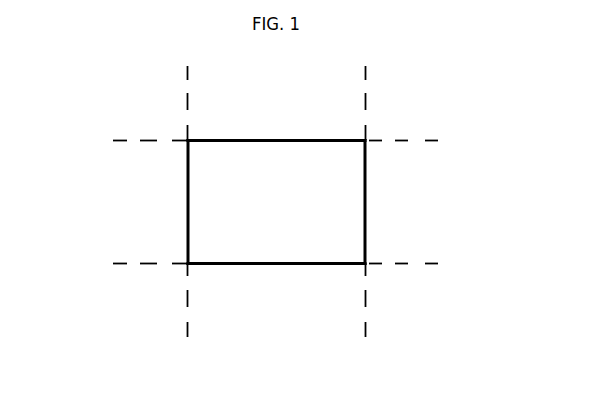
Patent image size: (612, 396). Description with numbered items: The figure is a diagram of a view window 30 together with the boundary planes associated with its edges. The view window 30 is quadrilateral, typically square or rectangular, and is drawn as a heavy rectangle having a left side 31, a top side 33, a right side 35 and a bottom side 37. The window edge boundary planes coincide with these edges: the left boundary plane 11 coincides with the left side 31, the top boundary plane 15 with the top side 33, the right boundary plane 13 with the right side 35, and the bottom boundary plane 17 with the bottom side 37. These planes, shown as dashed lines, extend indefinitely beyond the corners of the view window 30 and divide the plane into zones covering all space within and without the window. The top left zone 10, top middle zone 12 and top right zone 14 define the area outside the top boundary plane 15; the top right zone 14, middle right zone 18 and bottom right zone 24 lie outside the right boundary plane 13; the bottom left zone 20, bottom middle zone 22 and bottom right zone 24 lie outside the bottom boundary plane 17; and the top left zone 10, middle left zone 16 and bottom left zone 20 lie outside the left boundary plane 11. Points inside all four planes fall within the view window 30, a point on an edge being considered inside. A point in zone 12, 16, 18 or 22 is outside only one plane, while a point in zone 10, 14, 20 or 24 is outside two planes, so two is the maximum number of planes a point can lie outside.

The top left zone 10 is at (152, 104).
The left boundary plane 11 is at (186, 70).
The top middle zone 12 is at (286, 104).
The right boundary plane 13 is at (367, 71).
The top right zone 14 is at (419, 106).
The top boundary plane 15 is at (438, 140).
The middle left zone 16 is at (152, 210).
The bottom boundary plane 17 is at (434, 263).
The middle right zone 18 is at (429, 210).
The bottom left zone 20 is at (159, 306).
The bottom middle zone 22 is at (286, 306).
The bottom right zone 24 is at (426, 306).
The view window 30 is at (286, 210).
The left side 31 is at (190, 177).
The top side 33 is at (313, 140).
The right side 35 is at (367, 245).
The bottom side 37 is at (208, 266).